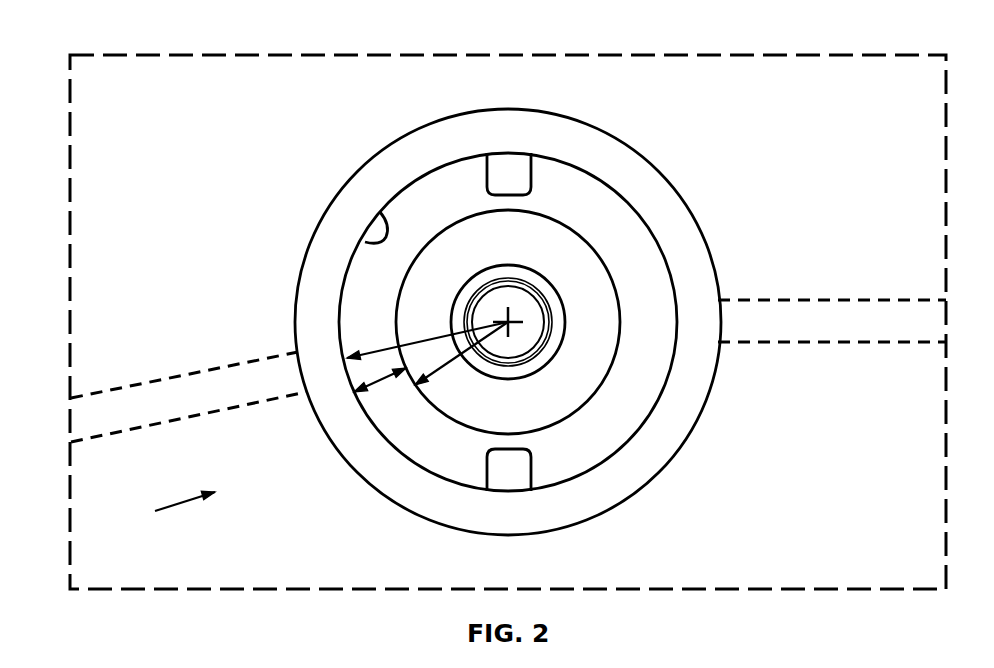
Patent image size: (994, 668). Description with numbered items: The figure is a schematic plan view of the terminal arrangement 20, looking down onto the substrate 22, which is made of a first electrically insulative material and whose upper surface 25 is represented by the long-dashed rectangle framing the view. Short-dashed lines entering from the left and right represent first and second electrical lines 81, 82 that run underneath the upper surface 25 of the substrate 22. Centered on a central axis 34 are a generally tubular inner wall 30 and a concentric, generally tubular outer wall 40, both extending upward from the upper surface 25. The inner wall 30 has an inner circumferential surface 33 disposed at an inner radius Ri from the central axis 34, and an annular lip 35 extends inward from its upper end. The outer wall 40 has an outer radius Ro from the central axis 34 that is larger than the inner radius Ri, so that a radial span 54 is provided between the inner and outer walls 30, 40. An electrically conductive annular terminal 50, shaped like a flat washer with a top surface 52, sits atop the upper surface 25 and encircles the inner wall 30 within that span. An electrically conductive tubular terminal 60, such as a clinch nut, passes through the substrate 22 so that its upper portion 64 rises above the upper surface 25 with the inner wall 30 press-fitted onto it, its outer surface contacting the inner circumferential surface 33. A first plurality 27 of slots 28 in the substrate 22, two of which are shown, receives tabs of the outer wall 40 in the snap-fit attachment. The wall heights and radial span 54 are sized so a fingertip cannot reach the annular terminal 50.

The terminal arrangement 20 is at (172, 52).
The substrate 22 is at (512, 329).
The upper surface 25 is at (237, 153).
The first plurality of slots 27 is at (167, 512).
The slot 28 is at (495, 175).
The inner wall 30 is at (577, 290).
The inner circumferential surface 33 is at (380, 212).
The central axis 34 is at (510, 324).
The annular lip 35 is at (556, 312).
The outer wall 40 is at (692, 272).
The annular terminal 50 is at (531, 285).
The top surface 52 is at (568, 193).
The radial span 54 is at (378, 392).
The tubular terminal 60 is at (640, 401).
The upper portion 64 is at (543, 345).
The first electrical line 81 is at (215, 378).
The second electrical line 82 is at (793, 331).
The outer radius Ro is at (385, 352).
The inner radius Ri is at (453, 365).